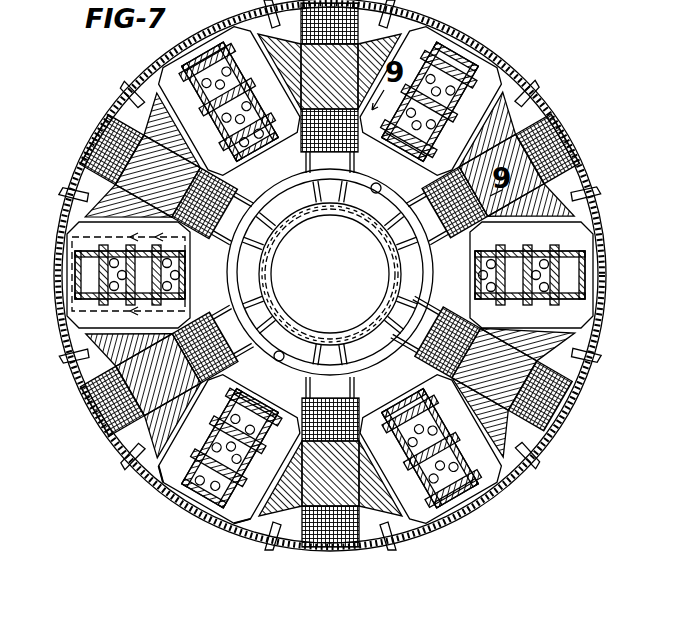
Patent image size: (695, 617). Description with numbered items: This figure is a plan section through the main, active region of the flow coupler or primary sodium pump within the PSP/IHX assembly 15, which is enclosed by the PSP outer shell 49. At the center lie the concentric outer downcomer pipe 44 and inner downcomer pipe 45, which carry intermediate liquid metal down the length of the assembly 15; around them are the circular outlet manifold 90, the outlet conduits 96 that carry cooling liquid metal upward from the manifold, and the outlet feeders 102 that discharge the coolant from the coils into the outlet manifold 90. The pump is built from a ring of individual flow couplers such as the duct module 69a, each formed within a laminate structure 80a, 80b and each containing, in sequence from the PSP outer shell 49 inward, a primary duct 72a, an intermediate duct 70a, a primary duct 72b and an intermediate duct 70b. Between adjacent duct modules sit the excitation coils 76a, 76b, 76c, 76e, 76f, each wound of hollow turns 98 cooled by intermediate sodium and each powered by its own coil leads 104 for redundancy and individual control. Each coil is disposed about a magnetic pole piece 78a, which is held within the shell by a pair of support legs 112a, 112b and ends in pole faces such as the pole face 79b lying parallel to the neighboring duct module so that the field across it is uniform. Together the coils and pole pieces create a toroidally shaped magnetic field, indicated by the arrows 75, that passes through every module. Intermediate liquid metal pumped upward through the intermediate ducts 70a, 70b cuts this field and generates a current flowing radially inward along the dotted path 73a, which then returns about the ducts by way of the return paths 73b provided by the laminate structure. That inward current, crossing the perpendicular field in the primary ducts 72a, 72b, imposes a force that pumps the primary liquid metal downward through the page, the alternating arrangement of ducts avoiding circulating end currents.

The PSP/IHX assembly 15 is at (562, 92).
The outer downcomer pipe 44 is at (400, 270).
The inner downcomer pipe 45 is at (390, 257).
The PSP outer shell 49 is at (604, 344).
The duct module 69a is at (206, 513).
The intermediate duct 70a is at (242, 526).
The intermediate duct 70b is at (291, 412).
The primary duct 72a is at (172, 496).
The primary duct 72b is at (222, 391).
The current path 73a is at (188, 268).
The return paths 73b is at (70, 224).
The magnetic field arrows 75 is at (152, 177).
The excitation coil 76a is at (348, 551).
The excitation coil 76b is at (145, 400).
The excitation coil 76c is at (150, 140).
The excitation coil 76e is at (550, 137).
The excitation coil 76f is at (555, 420).
The pole piece 78a is at (298, 525).
The pole face 79b is at (186, 245).
The laminate structure 80a is at (164, 480).
The laminate structure 80b is at (78, 290).
The outlet manifold 90 is at (432, 282).
The outlet conduits 96 is at (330, 274).
The hollow turns 98 is at (558, 386).
The outlet feeders 102 is at (400, 167).
The coil leads 104 is at (313, 161).
The support leg 112a is at (266, 540).
The support leg 112b is at (134, 450).